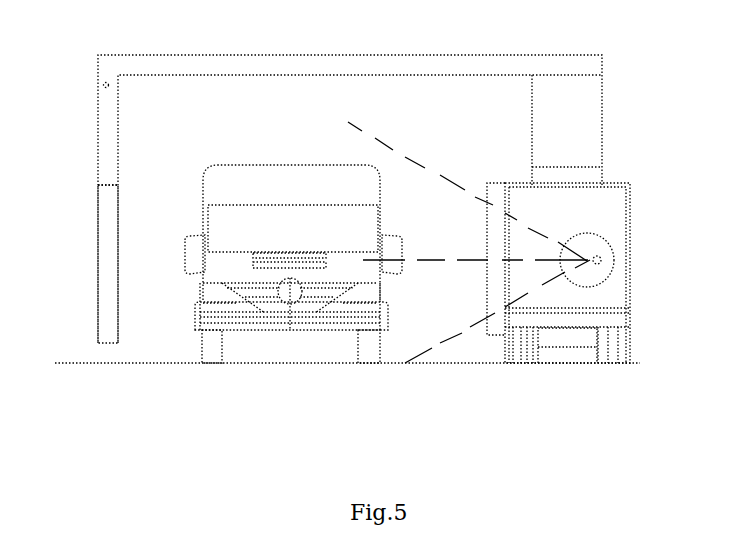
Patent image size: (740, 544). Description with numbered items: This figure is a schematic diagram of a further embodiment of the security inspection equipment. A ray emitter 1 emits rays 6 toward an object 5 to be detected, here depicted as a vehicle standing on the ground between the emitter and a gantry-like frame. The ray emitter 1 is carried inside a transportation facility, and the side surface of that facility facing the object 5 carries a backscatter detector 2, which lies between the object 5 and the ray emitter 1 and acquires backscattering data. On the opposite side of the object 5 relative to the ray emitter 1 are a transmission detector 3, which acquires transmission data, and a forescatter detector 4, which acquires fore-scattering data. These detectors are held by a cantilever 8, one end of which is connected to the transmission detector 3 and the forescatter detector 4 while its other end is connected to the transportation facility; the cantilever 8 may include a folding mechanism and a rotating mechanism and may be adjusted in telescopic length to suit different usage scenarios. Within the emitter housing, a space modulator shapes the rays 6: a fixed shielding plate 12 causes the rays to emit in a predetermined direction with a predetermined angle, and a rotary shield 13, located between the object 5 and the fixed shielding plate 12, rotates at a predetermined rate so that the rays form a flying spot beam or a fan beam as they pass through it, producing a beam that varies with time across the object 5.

The ray emitter 1 is at (597, 263).
The backscatter detector 2 is at (497, 195).
The transmission detector 3 is at (105, 225).
The forescatter detector 4 is at (105, 256).
The object to be detected 5 is at (268, 183).
The rays 6 is at (387, 147).
The cantilever 8 is at (303, 62).
The fixed shielding plate 12 is at (605, 256).
The rotary shield 13 is at (607, 243).